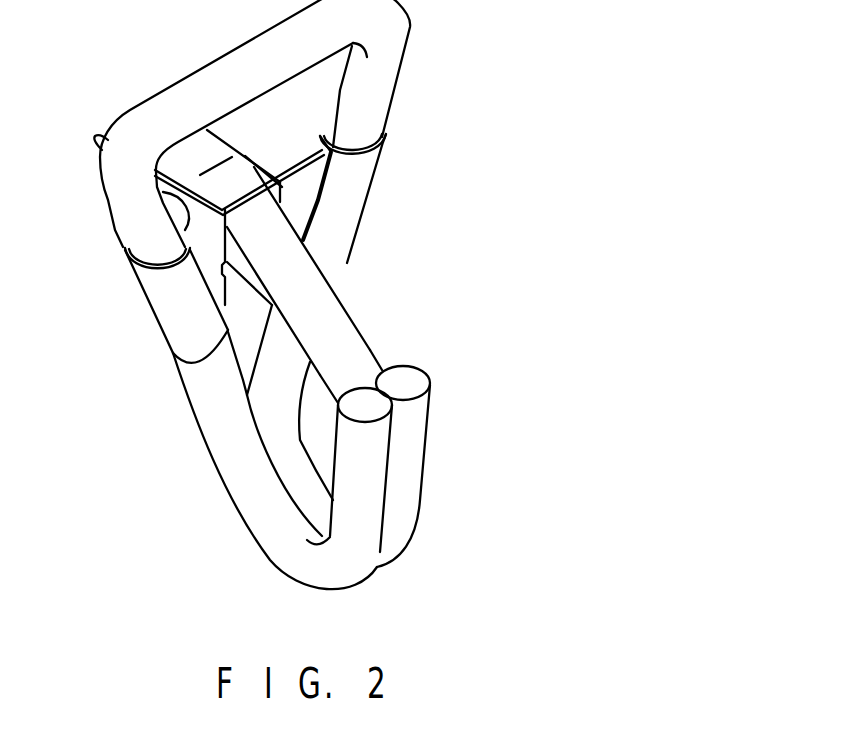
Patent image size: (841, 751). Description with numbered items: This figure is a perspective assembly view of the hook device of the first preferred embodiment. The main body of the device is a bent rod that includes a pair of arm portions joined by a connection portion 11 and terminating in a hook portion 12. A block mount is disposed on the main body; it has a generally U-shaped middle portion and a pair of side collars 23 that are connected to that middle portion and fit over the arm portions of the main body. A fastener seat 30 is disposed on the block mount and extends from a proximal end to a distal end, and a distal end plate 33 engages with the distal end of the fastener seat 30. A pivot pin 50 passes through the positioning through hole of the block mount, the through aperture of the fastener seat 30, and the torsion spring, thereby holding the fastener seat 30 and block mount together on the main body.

The connection portion 11 is at (247, 395).
The hook portion 12 is at (407, 480).
The side collar 23 is at (345, 210).
The fastener seat 30 is at (305, 275).
The distal end plate 33 is at (326, 373).
The pivot pin 50 is at (175, 210).